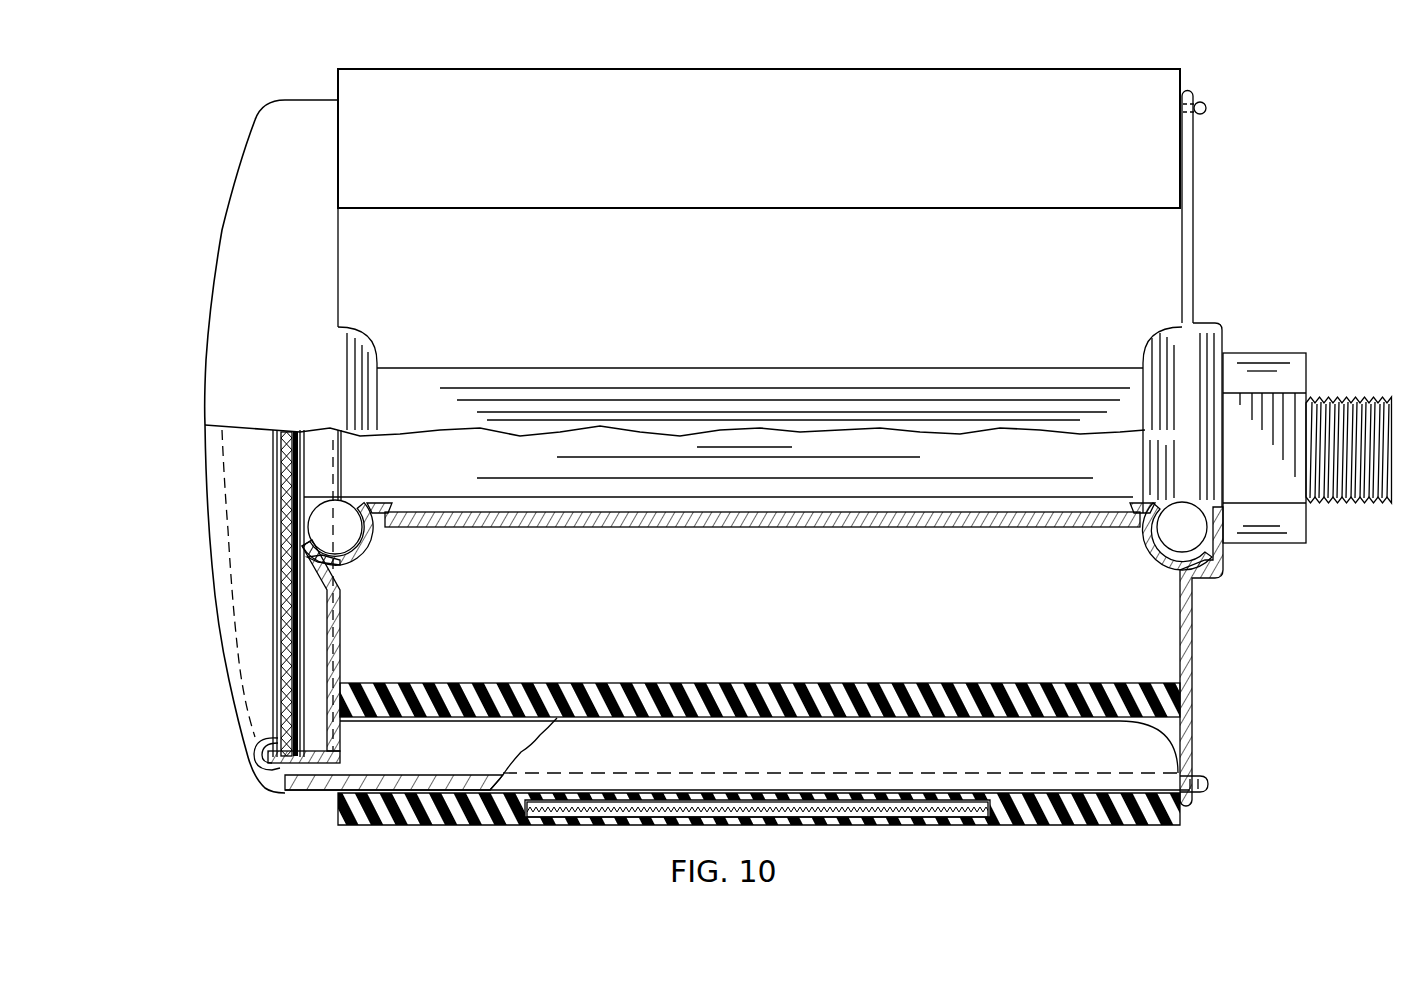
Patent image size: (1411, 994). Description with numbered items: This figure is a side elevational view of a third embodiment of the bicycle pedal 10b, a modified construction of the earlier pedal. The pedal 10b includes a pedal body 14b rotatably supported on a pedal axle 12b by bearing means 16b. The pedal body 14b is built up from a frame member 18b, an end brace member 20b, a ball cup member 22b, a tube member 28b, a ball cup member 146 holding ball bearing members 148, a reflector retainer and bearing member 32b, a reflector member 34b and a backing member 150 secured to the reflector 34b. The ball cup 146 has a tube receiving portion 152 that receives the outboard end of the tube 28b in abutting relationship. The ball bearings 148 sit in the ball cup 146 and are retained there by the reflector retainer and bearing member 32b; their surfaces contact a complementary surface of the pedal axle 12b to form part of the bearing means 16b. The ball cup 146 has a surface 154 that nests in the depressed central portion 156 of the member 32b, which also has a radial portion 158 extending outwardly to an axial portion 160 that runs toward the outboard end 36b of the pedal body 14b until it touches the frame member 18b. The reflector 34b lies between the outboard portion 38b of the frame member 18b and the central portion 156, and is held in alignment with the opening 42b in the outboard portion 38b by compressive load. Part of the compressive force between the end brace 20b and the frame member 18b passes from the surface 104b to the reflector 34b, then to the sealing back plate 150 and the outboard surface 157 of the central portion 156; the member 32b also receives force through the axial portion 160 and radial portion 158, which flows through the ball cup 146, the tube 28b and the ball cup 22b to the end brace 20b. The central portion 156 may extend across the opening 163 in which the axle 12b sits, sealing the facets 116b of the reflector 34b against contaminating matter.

The bicycle pedal 10b is at (1257, 153).
The pedal axle 12b is at (1262, 353).
The pedal body 14b is at (1240, 46).
The bearing means 16b is at (1168, 495).
The frame member 18b is at (298, 100).
The end brace member 20b is at (1194, 262).
The ball cup member 22b is at (1165, 555).
The tube member 28b is at (908, 528).
The reflector retainer and bearing member 32b is at (340, 655).
The reflector member 34b is at (278, 670).
The outboard end 36b is at (185, 307).
The outboard portion 38b is at (225, 222).
The opening 42b is at (253, 742).
The surface 104b is at (275, 734).
The facets 116b is at (281, 483).
The ball cup member 146 is at (345, 535).
The ball bearing members 148 is at (365, 563).
The backing member 150 is at (282, 600).
The tube receiving portion 152 is at (410, 482).
The surface 154 is at (320, 562).
The depressed central portion 156 is at (335, 585).
The outboard surface 157 is at (280, 545).
The radial portion 158 is at (341, 670).
The axial portion 160 is at (313, 764).
The opening 163 is at (283, 488).